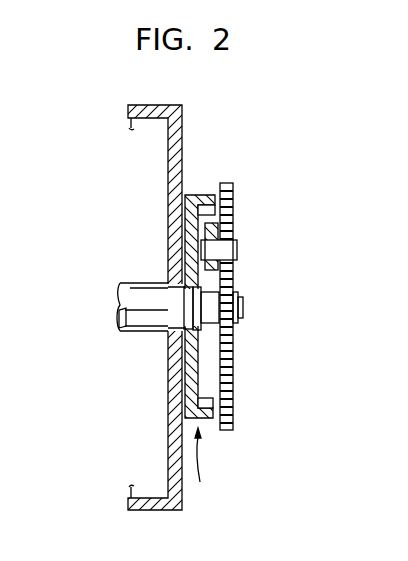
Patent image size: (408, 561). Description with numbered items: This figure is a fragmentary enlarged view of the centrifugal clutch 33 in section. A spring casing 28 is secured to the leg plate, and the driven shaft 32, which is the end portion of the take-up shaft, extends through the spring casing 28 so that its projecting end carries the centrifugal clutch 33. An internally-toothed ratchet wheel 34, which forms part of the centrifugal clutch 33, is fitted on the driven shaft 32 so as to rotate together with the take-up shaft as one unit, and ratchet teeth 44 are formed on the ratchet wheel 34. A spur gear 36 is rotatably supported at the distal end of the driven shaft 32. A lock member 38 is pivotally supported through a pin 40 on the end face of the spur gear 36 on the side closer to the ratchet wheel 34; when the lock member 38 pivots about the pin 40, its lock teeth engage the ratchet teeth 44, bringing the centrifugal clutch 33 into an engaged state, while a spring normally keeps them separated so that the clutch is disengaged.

The spring casing 28 is at (183, 134).
The driven shaft 32 is at (130, 332).
The centrifugal clutch 33 is at (205, 468).
The internally-toothed ratchet wheel 34 is at (206, 195).
The spur gear 36 is at (226, 430).
The lock member 38 is at (219, 263).
The pin 40 is at (237, 250).
The ratchet teeth 44 is at (215, 209).